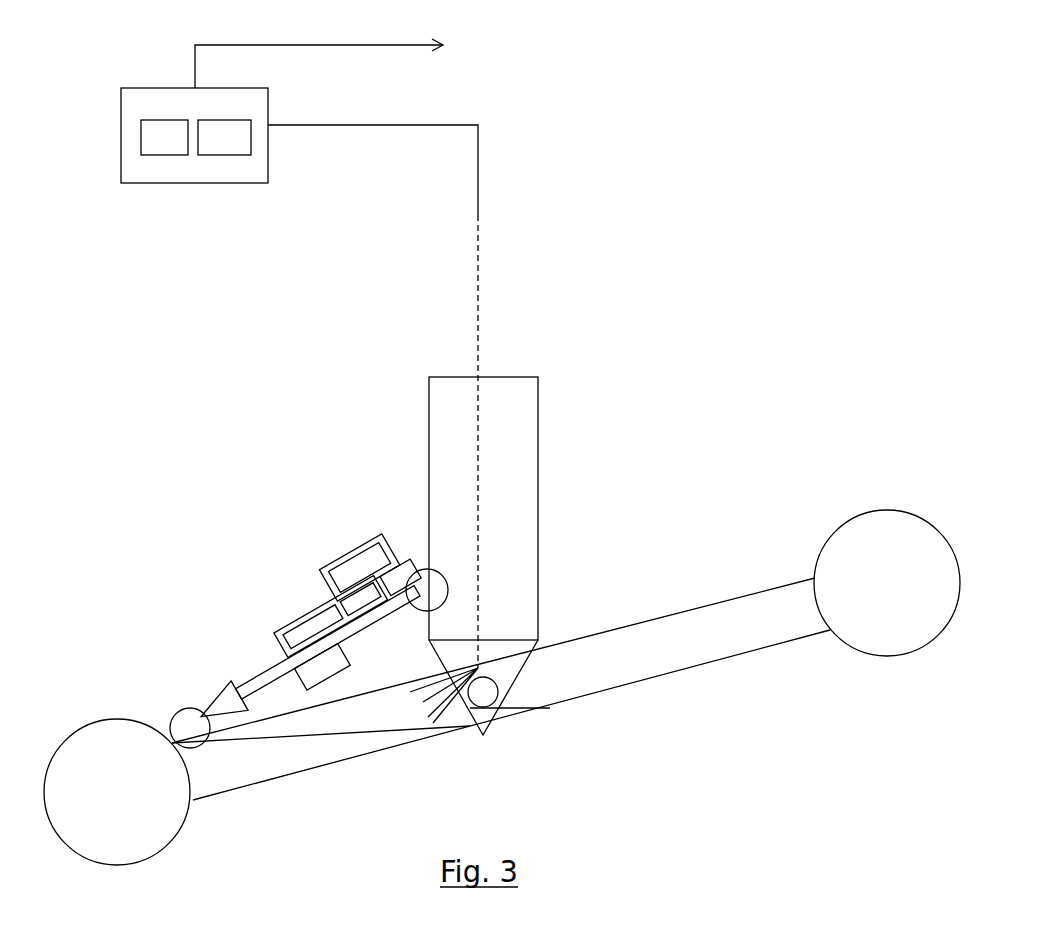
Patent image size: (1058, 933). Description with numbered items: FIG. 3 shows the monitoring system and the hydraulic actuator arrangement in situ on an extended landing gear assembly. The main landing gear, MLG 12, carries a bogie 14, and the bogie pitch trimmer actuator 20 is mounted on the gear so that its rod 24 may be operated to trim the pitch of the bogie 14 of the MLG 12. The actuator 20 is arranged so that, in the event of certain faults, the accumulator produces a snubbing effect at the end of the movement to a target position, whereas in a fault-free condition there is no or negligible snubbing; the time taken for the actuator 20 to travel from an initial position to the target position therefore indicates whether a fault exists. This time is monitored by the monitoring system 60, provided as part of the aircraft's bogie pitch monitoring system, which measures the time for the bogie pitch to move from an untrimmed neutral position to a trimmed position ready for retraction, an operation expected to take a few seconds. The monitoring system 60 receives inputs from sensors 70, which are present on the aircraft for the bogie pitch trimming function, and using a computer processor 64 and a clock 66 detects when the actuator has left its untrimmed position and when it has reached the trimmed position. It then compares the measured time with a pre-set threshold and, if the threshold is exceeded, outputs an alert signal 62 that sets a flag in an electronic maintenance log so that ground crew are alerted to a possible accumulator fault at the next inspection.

The MLG 12 is at (352, 476).
The bogie 14 is at (645, 628).
The bogie pitch trimmer actuator 20 is at (281, 646).
The rod 24 is at (252, 693).
The monitoring system 60 is at (213, 177).
The alert signal 62 is at (353, 43).
The computer processor 64 is at (179, 152).
The clock 66 is at (209, 152).
The sensors 70 is at (417, 700).